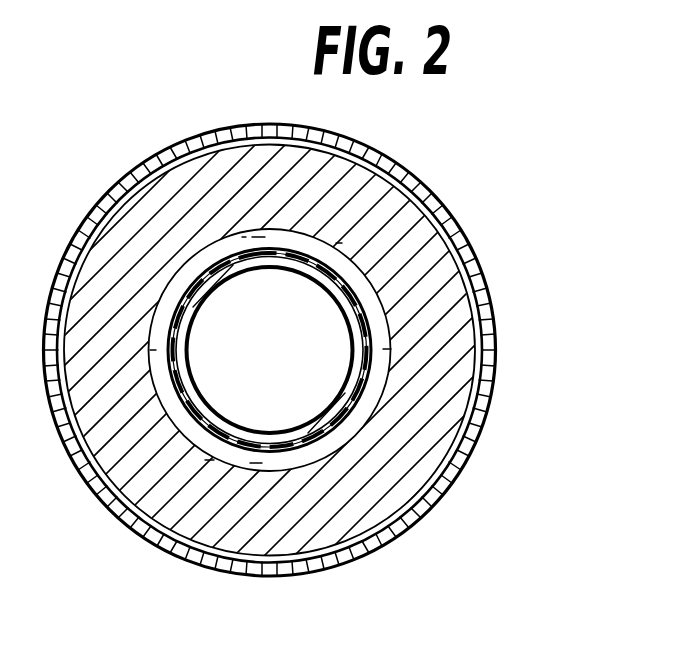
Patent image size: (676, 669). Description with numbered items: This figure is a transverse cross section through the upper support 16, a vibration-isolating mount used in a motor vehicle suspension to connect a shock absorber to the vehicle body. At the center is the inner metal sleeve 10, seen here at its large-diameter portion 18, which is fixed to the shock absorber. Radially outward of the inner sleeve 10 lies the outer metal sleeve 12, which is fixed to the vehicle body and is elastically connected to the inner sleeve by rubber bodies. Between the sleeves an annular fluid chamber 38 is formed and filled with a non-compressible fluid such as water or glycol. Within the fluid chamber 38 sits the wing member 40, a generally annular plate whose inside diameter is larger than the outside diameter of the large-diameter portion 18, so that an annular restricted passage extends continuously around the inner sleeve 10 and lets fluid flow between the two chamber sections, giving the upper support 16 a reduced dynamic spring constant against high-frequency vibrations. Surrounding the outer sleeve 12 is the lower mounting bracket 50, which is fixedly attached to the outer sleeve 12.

The upper support 16 is at (118, 118).
The lower mounting bracket 50 is at (477, 408).
The outer metal sleeve 12 is at (115, 493).
The wing member 40 is at (365, 493).
The annular fluid chamber 38 is at (410, 254).
The inner metal sleeve 10 is at (189, 351).
The large-diameter portion 18 is at (358, 344).